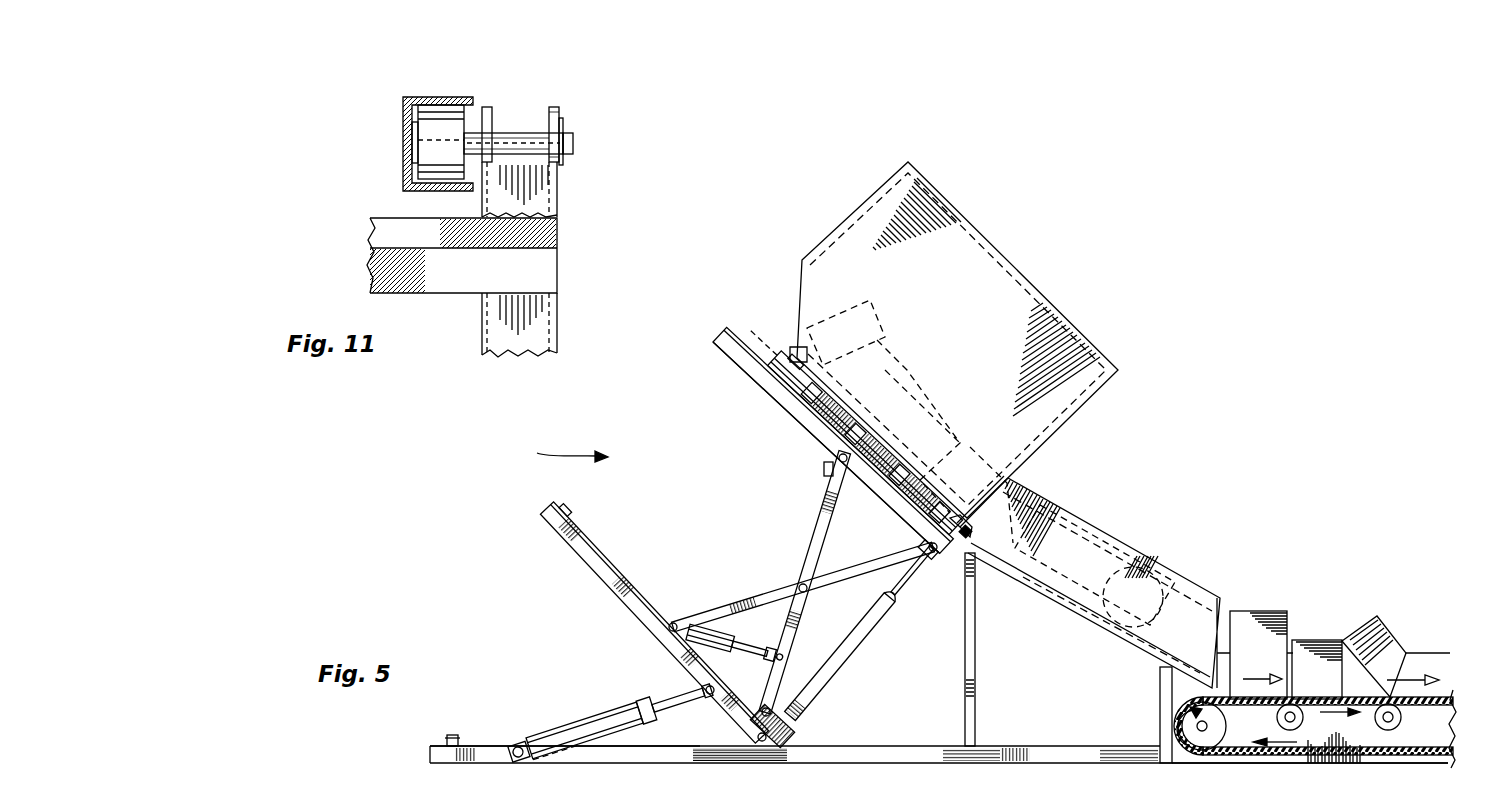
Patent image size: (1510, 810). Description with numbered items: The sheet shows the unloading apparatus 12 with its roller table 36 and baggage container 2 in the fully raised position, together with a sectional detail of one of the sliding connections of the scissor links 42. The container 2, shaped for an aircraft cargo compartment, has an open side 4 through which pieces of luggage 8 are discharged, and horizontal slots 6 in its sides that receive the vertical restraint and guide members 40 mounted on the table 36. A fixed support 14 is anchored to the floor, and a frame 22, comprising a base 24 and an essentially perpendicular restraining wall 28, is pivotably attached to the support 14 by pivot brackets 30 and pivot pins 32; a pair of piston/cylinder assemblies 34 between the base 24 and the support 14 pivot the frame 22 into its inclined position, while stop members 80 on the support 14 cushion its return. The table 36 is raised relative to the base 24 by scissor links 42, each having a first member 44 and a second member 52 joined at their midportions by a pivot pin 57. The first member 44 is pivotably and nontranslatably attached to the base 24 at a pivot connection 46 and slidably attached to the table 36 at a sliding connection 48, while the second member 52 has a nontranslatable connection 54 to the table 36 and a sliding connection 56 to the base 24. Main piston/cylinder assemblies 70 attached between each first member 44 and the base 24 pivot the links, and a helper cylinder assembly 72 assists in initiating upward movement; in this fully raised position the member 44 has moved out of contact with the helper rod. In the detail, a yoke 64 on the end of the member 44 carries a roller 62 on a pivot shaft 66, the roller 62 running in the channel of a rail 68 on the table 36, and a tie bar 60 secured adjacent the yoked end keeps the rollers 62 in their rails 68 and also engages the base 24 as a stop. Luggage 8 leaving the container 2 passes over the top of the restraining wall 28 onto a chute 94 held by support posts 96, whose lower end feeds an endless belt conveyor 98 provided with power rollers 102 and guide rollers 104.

In FIG. 5, the baggage container 2 is at (942, 352).
In FIG. 5, the open side 4 is at (883, 451).
In FIG. 5, the horizontal slots 6 is at (797, 353).
In FIG. 5, the pieces of luggage 8 is at (918, 417).
In FIG. 5, the unloading apparatus 12 is at (554, 454).
In FIG. 5, the fixed support 14 is at (497, 746).
In FIG. 5, the frame 22 is at (796, 732).
In FIG. 5, the base 24 is at (566, 547).
In FIG. 5, the restraining wall 28 is at (860, 642).
In FIG. 5, the pivot brackets 30 is at (747, 741).
In FIG. 5, the pivot pins 32 is at (760, 741).
In FIG. 5, the piston/cylinder assemblies 34 is at (615, 731).
In FIG. 5, the roller table 36 is at (722, 351).
In FIG. 5, the vertical restraint and guide members 40 is at (757, 382).
In FIG. 5, the scissor links 42 is at (766, 562).
In FIG. 11, the first member 44 is at (557, 313).
In FIG. 5, the first member 44 is at (822, 507).
In FIG. 5, the pivot connection 46 is at (788, 708).
In FIG. 5, the sliding connection 48 is at (838, 456).
In FIG. 5, the second member 52 is at (900, 583).
In FIG. 5, the pivotable and nontranslatable connection 54 is at (950, 560).
In FIG. 5, the sliding connection 56 is at (680, 620).
In FIG. 5, the pivot pin 57 is at (810, 592).
In FIG. 11, the tie bar 60 is at (388, 217).
In FIG. 5, the tie bar 60 is at (825, 470).
In FIG. 11, the roller 62 is at (427, 140).
In FIG. 11, the yoke 64 is at (493, 110).
In FIG. 11, the pivot shaft 66 is at (528, 130).
In FIG. 11, the rail 68 is at (440, 97).
In FIG. 5, the main piston/cylinder assemblies 70 is at (718, 652).
In FIG. 5, the helper cylinder assembly 72 is at (700, 672).
In FIG. 5, the stop members 80 is at (447, 738).
In FIG. 5, the chute 94 is at (1143, 558).
In FIG. 5, the support posts 96 is at (975, 653).
In FIG. 5, the endless belt conveyor 98 is at (1462, 703).
In FIG. 5, the power rollers 102 is at (1180, 735).
In FIG. 5, the guide rollers 104 is at (1313, 723).